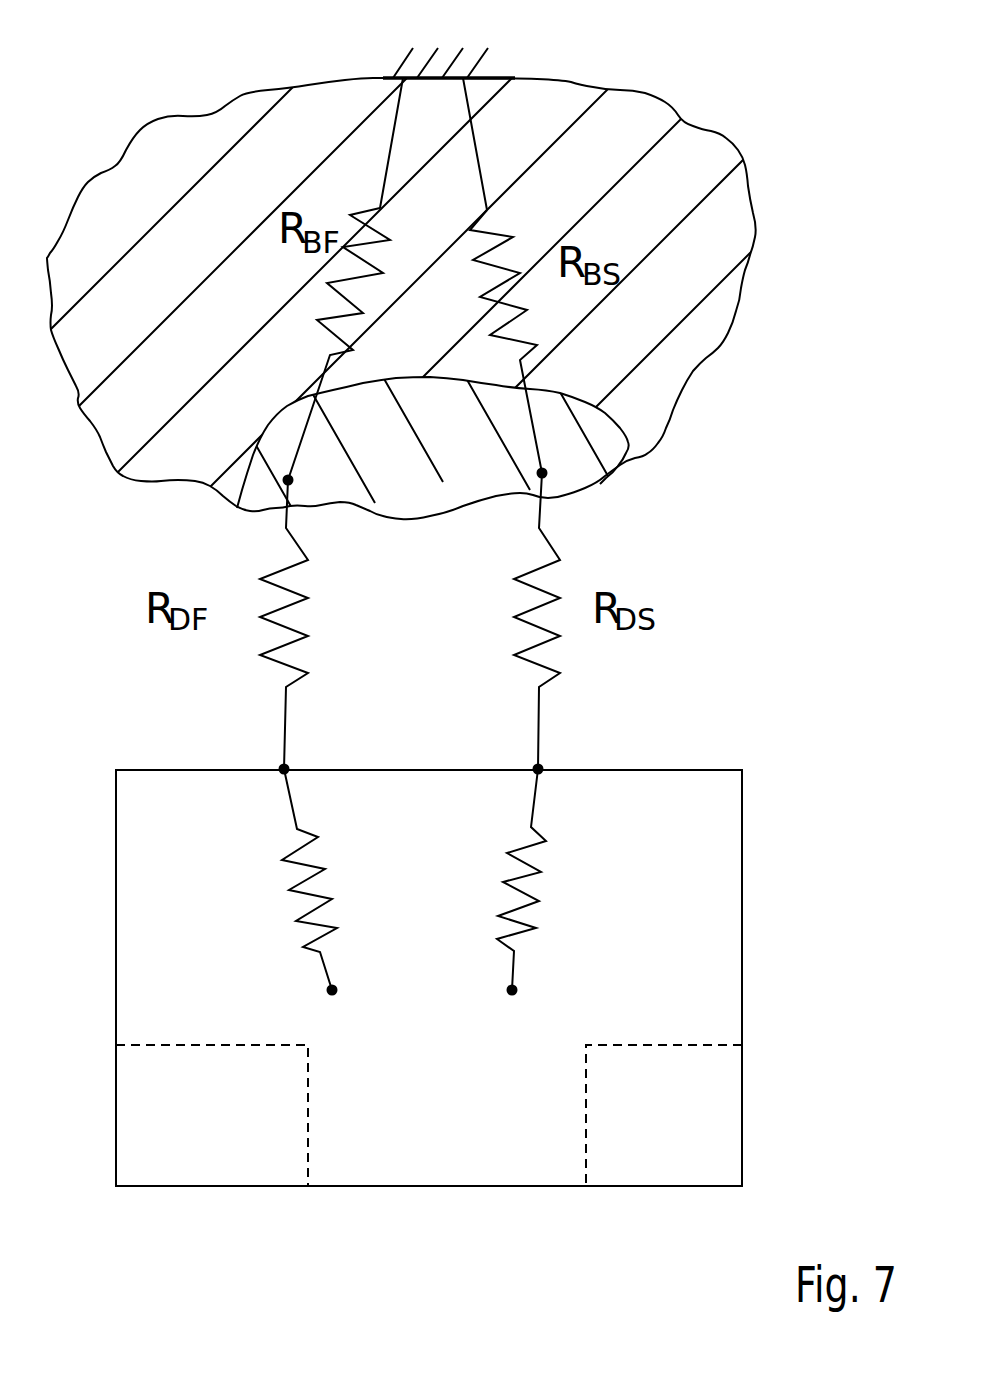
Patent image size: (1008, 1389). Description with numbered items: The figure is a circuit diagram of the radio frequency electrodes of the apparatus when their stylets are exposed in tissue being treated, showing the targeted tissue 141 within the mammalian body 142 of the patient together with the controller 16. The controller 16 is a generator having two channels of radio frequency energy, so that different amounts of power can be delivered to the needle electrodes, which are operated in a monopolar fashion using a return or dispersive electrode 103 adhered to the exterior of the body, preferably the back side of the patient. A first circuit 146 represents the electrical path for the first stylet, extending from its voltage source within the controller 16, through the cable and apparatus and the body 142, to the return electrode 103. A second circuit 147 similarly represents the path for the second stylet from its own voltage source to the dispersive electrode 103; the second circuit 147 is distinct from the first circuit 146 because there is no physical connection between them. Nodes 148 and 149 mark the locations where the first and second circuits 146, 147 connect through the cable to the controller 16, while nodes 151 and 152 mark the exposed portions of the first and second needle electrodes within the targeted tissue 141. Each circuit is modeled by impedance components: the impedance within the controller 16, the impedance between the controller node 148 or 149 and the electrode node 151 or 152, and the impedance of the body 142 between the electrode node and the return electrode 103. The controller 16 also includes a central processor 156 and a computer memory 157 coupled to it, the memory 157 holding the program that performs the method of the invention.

The return or dispersive electrode 103 is at (393, 79).
The mammalian body 142 is at (718, 132).
The targeted tissue 141 is at (625, 432).
The node 151 is at (284, 481).
The node 152 is at (547, 474).
The first circuit 146 is at (370, 664).
The second circuit 147 is at (474, 660).
The node 148 is at (284, 769).
The node 149 is at (538, 769).
The controller 16 is at (742, 883).
The central processor 156 is at (308, 1135).
The computer memory 157 is at (586, 1135).